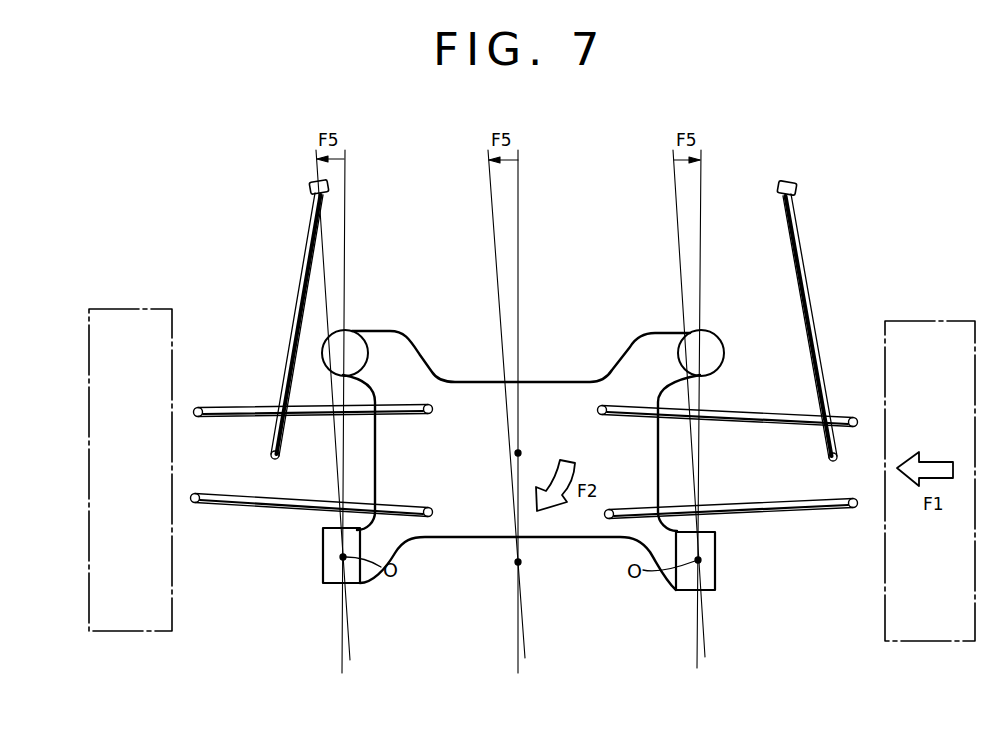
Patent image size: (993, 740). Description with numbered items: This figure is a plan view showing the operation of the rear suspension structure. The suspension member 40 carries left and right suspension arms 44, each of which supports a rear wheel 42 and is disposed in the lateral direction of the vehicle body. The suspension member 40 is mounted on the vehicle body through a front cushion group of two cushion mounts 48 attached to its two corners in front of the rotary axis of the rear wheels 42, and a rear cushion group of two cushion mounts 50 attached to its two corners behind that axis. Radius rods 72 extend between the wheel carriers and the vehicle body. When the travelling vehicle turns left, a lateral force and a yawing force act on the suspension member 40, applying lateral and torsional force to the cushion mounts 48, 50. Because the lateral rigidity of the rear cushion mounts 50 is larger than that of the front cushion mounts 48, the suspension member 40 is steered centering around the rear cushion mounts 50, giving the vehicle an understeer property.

The suspension member 40 is at (483, 523).
The rear wheel 42 is at (885, 567).
The suspension arm 44 is at (268, 508).
The cushion mount 48 is at (356, 340).
The cushion mount 50 is at (330, 570).
The radius rod 72 is at (296, 302).